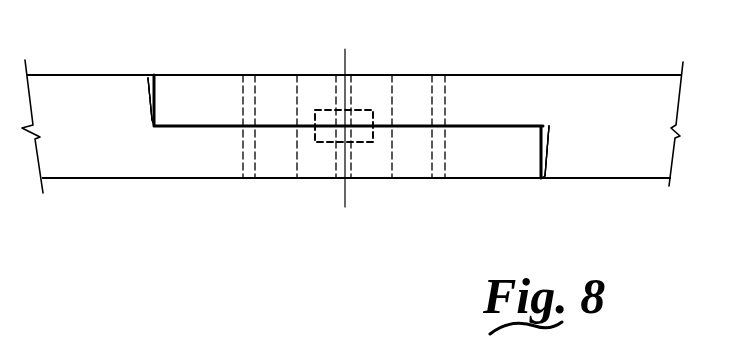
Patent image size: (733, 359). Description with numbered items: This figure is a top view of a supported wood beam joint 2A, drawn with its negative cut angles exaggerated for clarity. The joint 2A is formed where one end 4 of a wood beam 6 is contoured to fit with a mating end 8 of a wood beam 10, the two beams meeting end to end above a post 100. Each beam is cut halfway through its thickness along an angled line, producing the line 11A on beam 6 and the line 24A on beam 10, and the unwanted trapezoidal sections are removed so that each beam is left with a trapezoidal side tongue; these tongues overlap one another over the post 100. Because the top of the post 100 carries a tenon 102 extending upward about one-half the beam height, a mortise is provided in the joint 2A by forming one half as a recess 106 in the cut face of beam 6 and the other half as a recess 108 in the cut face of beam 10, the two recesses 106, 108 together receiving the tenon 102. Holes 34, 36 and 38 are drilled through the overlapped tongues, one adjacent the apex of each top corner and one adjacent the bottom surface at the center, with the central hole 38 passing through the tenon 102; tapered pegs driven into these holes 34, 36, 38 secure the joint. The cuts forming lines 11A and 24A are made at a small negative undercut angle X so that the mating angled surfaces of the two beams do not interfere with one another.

The wood beam joint 2A is at (332, 187).
The end of wood beam 4 is at (588, 165).
The wood beam 6 is at (593, 75).
The mating end of wood beam 8 is at (150, 172).
The wood beam 10 is at (77, 75).
The line 11A is at (551, 135).
The line 24A is at (149, 128).
The hole 34 is at (252, 86).
The hole 36 is at (438, 92).
The hole 38 is at (341, 100).
The post 100 is at (390, 90).
The tenon 102 is at (371, 110).
The recess 106 is at (329, 112).
The recess 108 is at (367, 136).
The negative undercut angle X is at (148, 122).